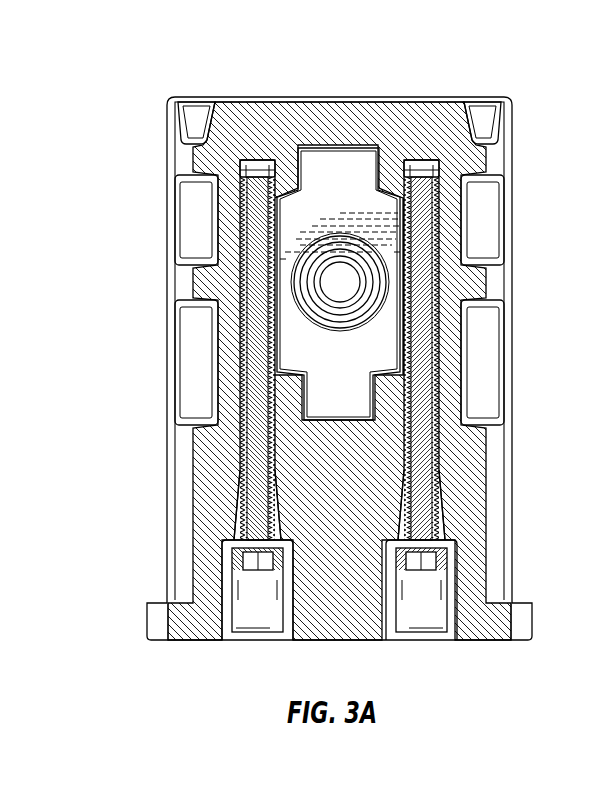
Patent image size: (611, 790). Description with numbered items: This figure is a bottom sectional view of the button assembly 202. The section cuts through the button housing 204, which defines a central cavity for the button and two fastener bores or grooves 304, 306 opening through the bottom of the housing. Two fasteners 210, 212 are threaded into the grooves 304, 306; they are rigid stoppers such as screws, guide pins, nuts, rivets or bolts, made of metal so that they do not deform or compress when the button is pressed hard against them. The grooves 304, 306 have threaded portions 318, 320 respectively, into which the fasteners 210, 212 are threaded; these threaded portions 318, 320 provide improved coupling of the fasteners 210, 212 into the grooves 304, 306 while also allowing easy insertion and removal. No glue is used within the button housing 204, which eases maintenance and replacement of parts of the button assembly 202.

The button assembly 202 is at (217, 62).
The button housing 204 is at (170, 193).
The fastener 210 is at (242, 393).
The fastener 212 is at (425, 450).
The threaded portion 318 is at (240, 512).
The threaded portion 320 is at (446, 526).
The fastener bore or groove 304 is at (242, 655).
The fastener bore or groove 306 is at (435, 655).